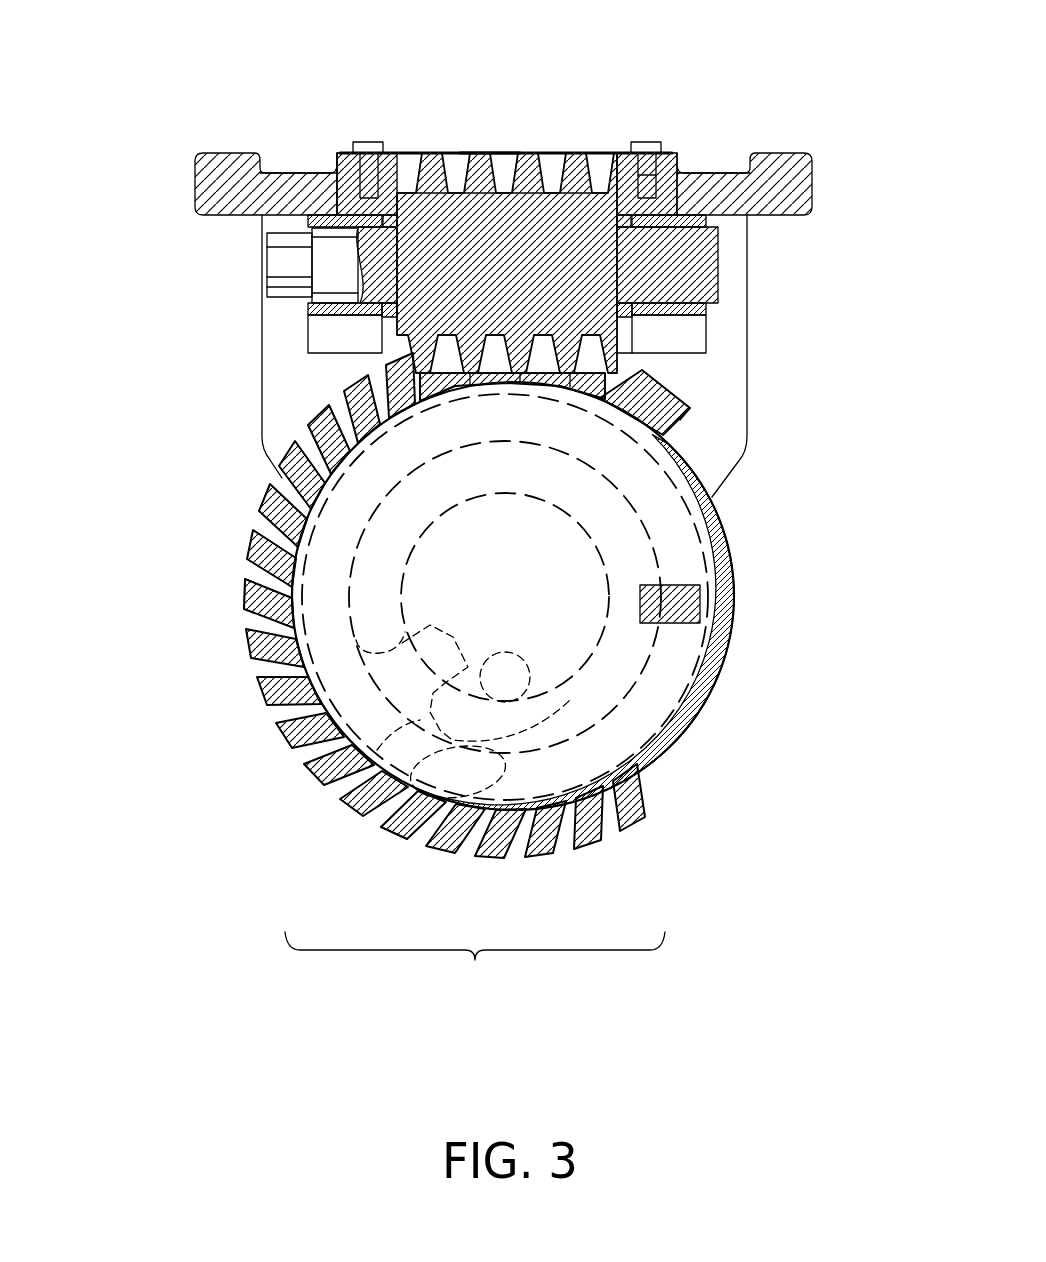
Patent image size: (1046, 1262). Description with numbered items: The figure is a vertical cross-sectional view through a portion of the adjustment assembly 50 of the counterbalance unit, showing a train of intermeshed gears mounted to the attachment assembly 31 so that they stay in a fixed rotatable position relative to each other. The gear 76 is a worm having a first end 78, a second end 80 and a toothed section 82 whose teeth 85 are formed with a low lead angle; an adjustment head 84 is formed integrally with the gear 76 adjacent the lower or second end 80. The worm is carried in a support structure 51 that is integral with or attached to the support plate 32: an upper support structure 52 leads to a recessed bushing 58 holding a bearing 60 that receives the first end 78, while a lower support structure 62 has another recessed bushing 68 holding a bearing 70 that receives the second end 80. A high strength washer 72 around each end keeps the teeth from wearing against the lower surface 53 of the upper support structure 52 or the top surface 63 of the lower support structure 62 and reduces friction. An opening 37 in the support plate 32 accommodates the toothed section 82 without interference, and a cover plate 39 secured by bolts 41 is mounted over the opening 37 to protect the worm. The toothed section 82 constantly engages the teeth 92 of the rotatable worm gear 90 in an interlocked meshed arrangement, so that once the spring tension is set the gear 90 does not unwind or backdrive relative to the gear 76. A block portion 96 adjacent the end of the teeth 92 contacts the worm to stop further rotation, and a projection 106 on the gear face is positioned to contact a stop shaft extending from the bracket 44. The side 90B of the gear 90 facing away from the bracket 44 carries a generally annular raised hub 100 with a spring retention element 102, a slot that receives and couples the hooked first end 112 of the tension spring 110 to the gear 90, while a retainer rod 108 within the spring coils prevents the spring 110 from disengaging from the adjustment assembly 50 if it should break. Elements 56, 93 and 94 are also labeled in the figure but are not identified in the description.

The attachment assembly 31 is at (835, 132).
The support plate 32 is at (790, 150).
The opening 37 is at (600, 178).
The cover plate 39 is at (547, 152).
The bolts 41 is at (366, 142).
The bracket 44 is at (750, 370).
The adjustment assembly 50 is at (475, 972).
The support structure 51 is at (238, 398).
The upper support structure 52 is at (772, 228).
The lower surface 53 is at (640, 358).
The right bearing 56 is at (695, 335).
The recessed bushing 58 is at (648, 185).
The bearing 60 is at (688, 192).
The lower support structure 62 is at (298, 345).
The top surface 63 is at (383, 356).
The recessed bushing 68 is at (308, 198).
The bearing 70 is at (345, 188).
The high strength washer 72 is at (393, 190).
The gear 76 is at (457, 203).
The first end 78 is at (715, 287).
The second end 80 is at (325, 297).
The toothed section 82 is at (493, 148).
The adjustment head 84 is at (270, 270).
The teeth 85 is at (530, 152).
The worm gear 90 is at (201, 707).
The other side 90B is at (300, 548).
The teeth 92 is at (262, 562).
The tooth flank 93 is at (383, 822).
The gear rim 94 is at (662, 776).
The block portion 96 is at (693, 406).
The hub 100 is at (373, 540).
The spring retention element 102 is at (345, 782).
The projection 106 is at (700, 602).
The retainer rod 108 is at (527, 668).
The tension spring 110 is at (247, 621).
The first end 112 is at (481, 621).